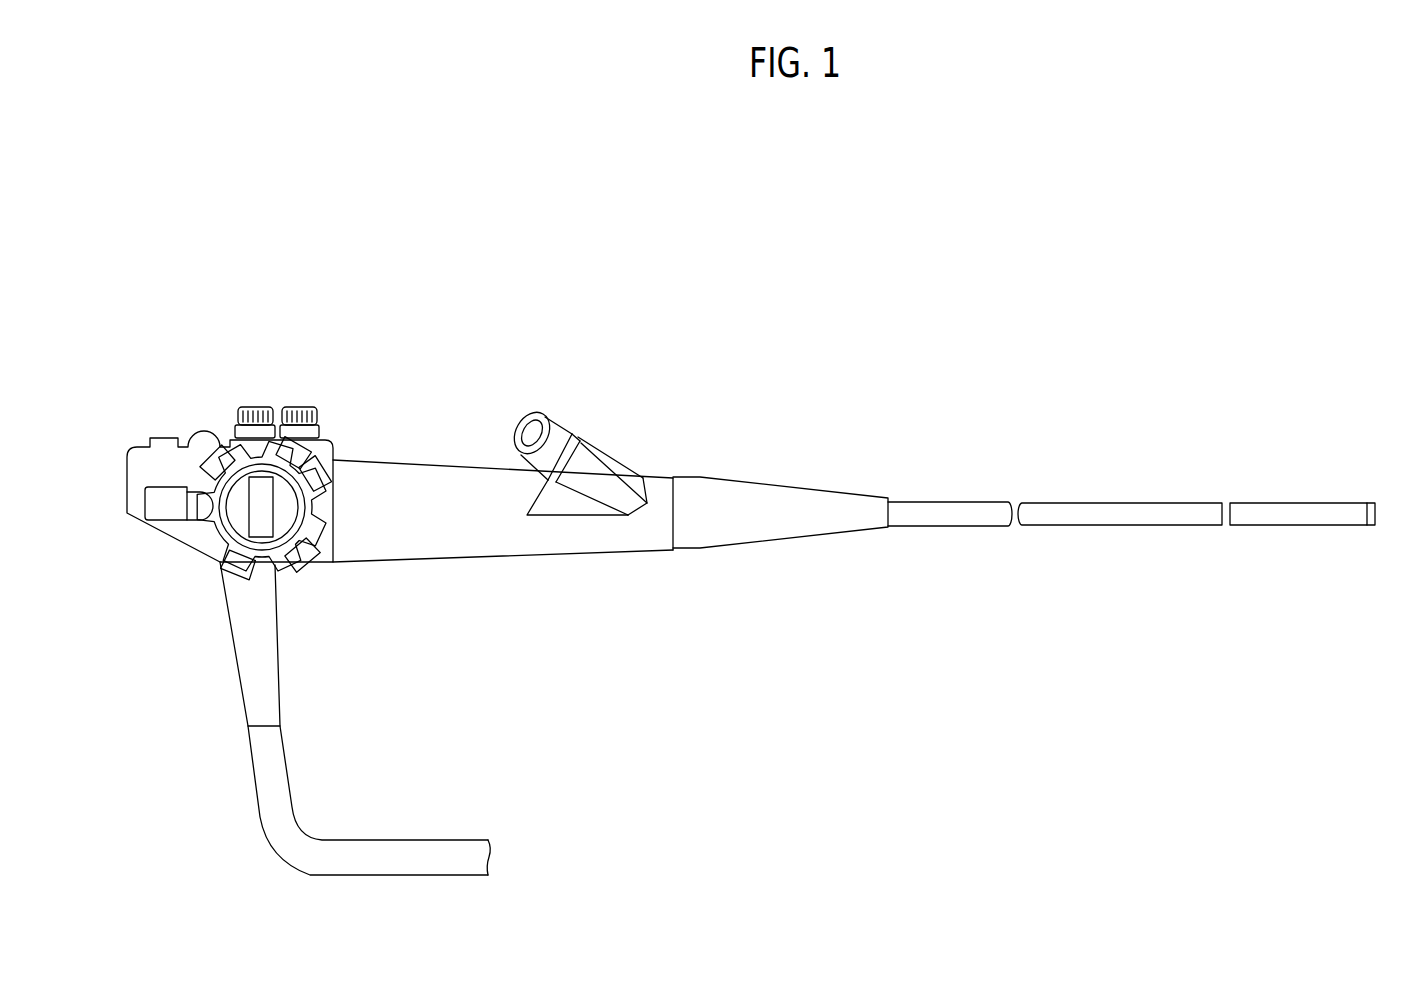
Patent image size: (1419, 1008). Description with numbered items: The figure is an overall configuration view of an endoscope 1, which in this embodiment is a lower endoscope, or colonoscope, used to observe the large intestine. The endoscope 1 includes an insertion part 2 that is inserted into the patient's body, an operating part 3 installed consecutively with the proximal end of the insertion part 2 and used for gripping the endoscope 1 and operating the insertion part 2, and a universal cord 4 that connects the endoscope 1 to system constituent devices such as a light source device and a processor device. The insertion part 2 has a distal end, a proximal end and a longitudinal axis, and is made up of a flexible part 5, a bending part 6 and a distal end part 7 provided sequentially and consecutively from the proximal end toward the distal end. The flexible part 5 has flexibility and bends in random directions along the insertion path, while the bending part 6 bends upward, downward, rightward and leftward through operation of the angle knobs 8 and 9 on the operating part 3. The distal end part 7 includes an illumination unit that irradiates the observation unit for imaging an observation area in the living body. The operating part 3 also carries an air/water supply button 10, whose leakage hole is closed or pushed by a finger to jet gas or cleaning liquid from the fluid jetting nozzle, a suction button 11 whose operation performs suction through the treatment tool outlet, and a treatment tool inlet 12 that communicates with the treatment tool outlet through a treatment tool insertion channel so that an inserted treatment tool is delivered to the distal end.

The endoscope 1 is at (882, 240).
The insertion part 2 is at (885, 372).
The operating part 3 is at (435, 325).
The universal cord 4 is at (268, 816).
The flexible part 5 is at (1127, 507).
The bending part 6 is at (1305, 507).
The distal end part 7 is at (1376, 512).
The angle knob 8 is at (322, 516).
The angle knob 9 is at (323, 562).
The air/water supply button 10 is at (300, 405).
The suction button 11 is at (253, 405).
The treatment tool inlet 12 is at (520, 432).